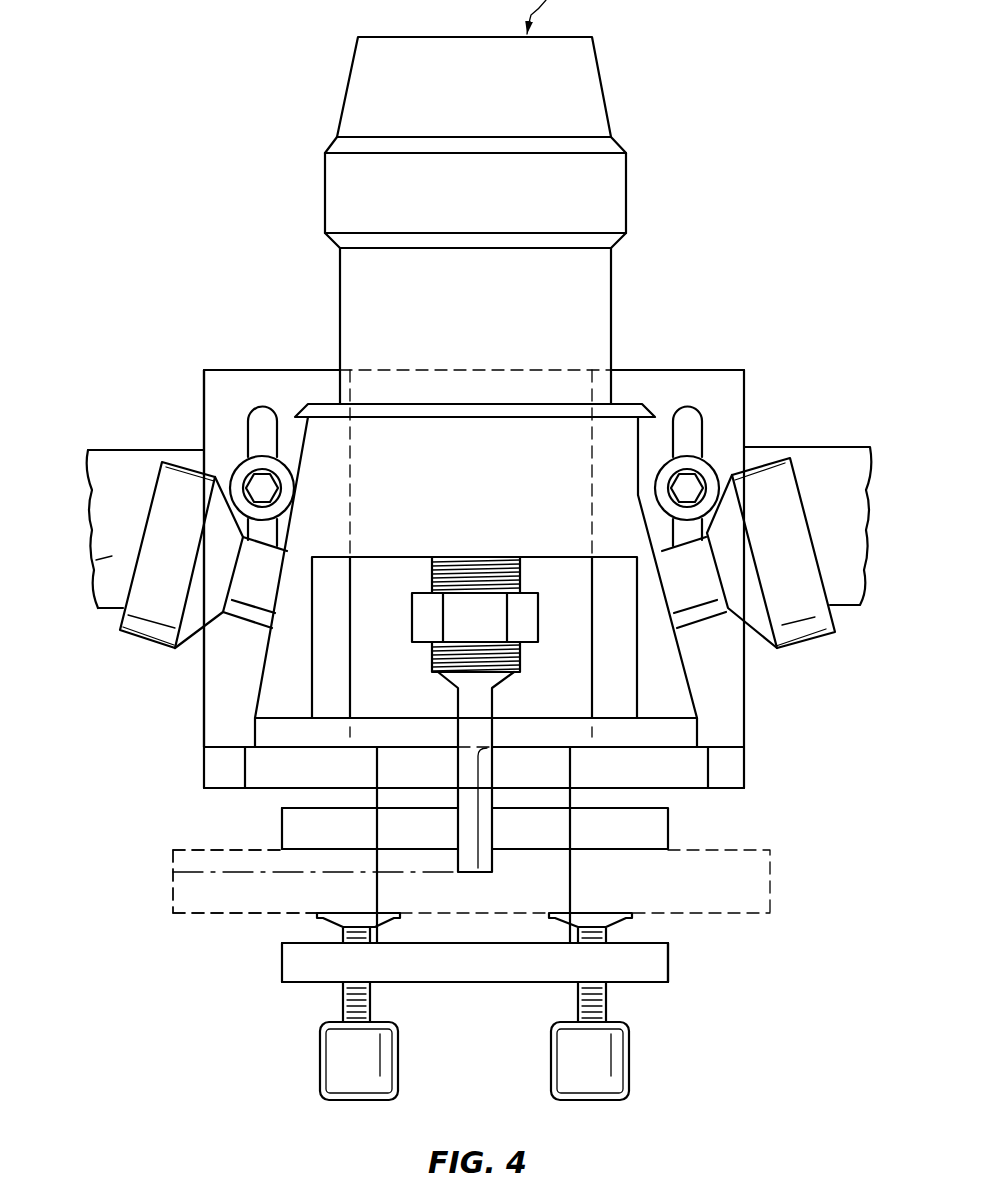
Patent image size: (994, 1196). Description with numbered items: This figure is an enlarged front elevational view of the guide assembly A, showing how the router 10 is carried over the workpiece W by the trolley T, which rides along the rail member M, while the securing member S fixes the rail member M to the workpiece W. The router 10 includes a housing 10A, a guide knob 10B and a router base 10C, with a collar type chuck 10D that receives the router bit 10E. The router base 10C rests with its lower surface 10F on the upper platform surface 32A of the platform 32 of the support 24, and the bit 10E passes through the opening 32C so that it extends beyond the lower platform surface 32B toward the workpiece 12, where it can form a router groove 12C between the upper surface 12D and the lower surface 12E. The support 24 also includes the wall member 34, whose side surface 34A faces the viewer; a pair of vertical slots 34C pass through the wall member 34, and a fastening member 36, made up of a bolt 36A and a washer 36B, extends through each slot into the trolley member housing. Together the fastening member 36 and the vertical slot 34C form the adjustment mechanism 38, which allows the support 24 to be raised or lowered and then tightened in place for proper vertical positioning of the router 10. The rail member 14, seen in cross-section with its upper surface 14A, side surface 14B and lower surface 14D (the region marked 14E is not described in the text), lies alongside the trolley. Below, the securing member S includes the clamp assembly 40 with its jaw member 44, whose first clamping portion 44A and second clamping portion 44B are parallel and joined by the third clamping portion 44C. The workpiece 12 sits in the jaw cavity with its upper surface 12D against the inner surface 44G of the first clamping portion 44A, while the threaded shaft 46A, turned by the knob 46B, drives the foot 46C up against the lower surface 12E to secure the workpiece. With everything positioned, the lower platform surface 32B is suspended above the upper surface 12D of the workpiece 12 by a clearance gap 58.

The router 10 is at (608, 108).
The housing 10A is at (626, 192).
The guide knob 10B is at (152, 530).
The router base 10C is at (702, 730).
The collar type chuck 10D is at (432, 584).
The router bit 10E is at (470, 699).
The lower surface 10F is at (262, 751).
The workpiece 12 is at (736, 917).
The router groove 12C is at (172, 862).
The upper surface 12D is at (222, 848).
The lower surface 12E is at (196, 916).
The rail member 14 is at (136, 448).
The upper surface 14A is at (100, 449).
The side surface 14B is at (113, 559).
The lower surface 14D is at (108, 612).
The right holder block 14E is at (863, 447).
The support 24 is at (224, 704).
The platform 32 is at (203, 787).
The upper platform surface 32A is at (730, 742).
The lower platform surface 32B is at (743, 788).
The opening 32C is at (378, 769).
The wall member 34 is at (693, 369).
The side surface 34A is at (637, 378).
The vertical slots 34C is at (257, 412).
The fastening member 36 is at (285, 464).
The bolt 36A is at (257, 488).
The washer 36B is at (243, 500).
The adjustment mechanism 38 is at (708, 463).
The clamp assembly 40 is at (670, 966).
The jaw member 44 is at (659, 984).
The first clamping portion 44A is at (565, 841).
The second clamping portion 44B is at (493, 971).
The third clamping portion 44C is at (493, 938).
The inner surface 44G is at (283, 849).
The threaded shaft 46A is at (343, 1002).
The knob 46B is at (328, 1069).
The foot 46C is at (323, 920).
The clearance gap 58 is at (688, 758).
The guide assembly A is at (214, 246).
The rail member M is at (827, 446).
The securing member S is at (280, 965).
The trolley T is at (203, 774).
The workpiece W is at (755, 914).